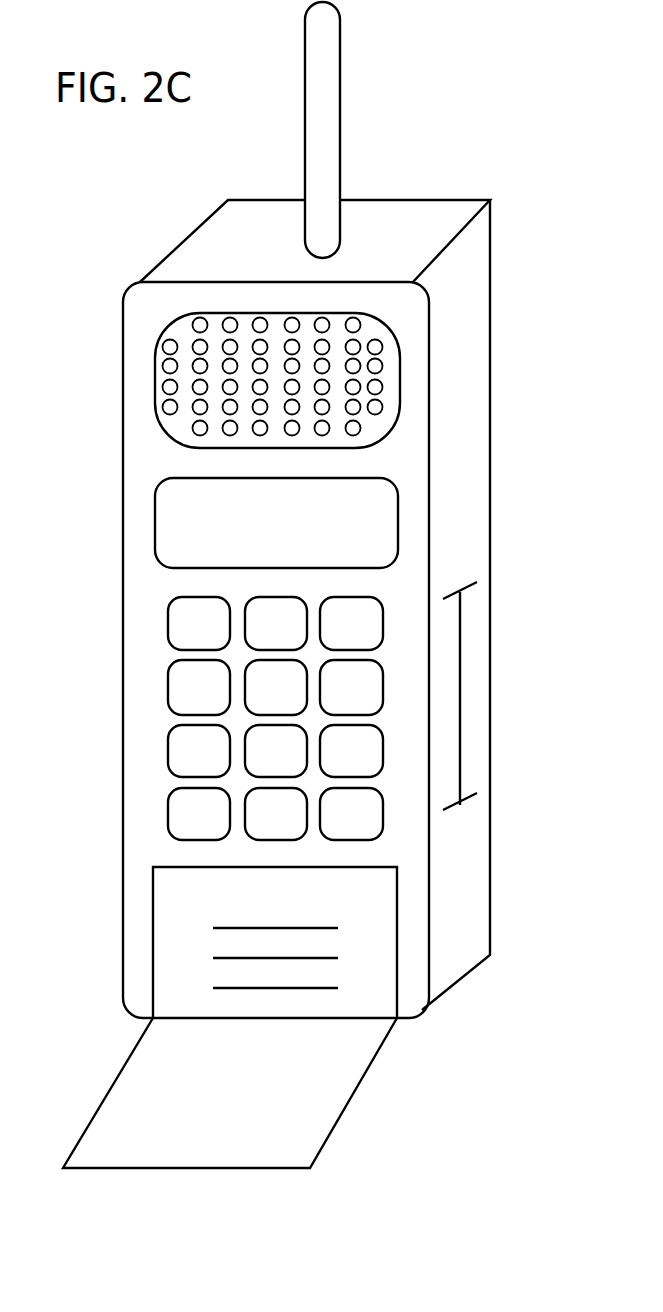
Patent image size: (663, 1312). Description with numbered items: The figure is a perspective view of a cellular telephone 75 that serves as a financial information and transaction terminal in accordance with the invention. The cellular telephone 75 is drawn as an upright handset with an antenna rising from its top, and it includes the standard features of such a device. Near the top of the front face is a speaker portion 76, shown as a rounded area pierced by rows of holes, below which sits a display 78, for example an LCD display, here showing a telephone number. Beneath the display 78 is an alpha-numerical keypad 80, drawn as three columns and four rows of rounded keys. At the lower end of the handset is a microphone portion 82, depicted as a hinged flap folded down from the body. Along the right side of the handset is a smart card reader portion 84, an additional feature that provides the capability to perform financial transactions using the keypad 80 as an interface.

The cellular telephone 75 is at (202, 238).
The speaker portion 76 is at (157, 357).
The display 78 is at (153, 507).
The alpha-numerical keypad 80 is at (165, 683).
The microphone portion 82 is at (380, 988).
The smart card reader portion 84 is at (477, 582).